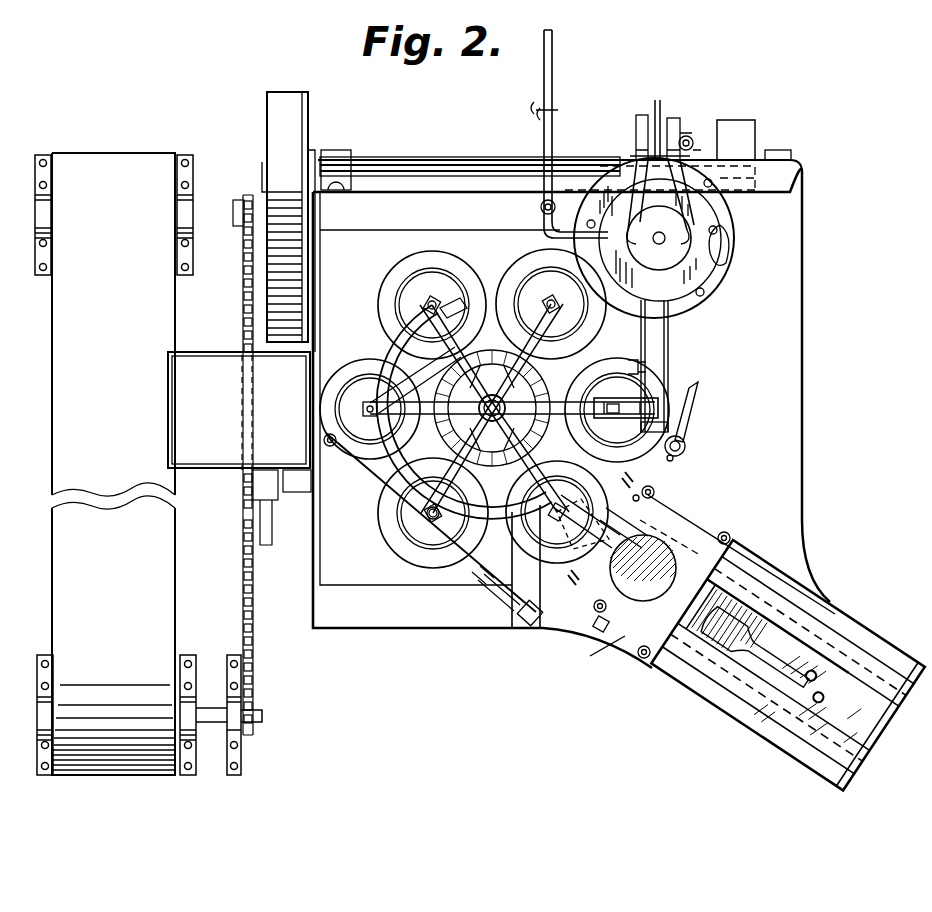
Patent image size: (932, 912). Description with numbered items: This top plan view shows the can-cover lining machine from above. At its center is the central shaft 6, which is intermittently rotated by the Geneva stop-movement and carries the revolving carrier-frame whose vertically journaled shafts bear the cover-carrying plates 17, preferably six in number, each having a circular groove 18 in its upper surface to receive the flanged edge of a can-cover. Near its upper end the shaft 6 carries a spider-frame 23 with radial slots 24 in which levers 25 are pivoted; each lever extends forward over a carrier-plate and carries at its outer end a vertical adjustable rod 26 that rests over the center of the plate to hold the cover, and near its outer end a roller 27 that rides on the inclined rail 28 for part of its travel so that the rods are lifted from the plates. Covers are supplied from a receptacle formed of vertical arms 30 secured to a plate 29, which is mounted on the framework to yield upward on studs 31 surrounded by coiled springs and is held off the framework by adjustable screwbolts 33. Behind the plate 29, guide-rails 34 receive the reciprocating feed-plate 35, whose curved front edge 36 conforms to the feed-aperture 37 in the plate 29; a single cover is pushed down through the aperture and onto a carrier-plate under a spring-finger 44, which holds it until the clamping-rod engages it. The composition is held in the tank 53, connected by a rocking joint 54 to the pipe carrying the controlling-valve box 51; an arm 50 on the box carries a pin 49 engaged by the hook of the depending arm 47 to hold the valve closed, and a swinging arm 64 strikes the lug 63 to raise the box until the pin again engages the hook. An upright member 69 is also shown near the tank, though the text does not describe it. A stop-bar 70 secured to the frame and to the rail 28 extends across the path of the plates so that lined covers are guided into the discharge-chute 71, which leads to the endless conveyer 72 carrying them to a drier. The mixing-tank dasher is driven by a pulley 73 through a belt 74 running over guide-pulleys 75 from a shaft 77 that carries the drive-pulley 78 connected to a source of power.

The central shaft 6 is at (510, 395).
The cover-carrying plates 17 is at (385, 324).
The circular grooves 18 is at (535, 278).
The spider-frame 23 is at (492, 440).
The radial slots 24 is at (515, 408).
The levers 25 is at (469, 323).
The vertical adjustable rod 26 is at (372, 413).
The roller 27 is at (380, 400).
The rail 28 is at (494, 459).
The plate 29 is at (618, 640).
The vertical arms 30 is at (680, 520).
The studs 31 is at (655, 490).
The adjustable screwbolts 33 is at (606, 527).
The guide-rails 34 is at (860, 640).
The feed-plate 35 is at (766, 656).
The curved front edge 36 is at (603, 527).
The feed-aperture 37 is at (595, 612).
The spring-finger 44 is at (566, 504).
The depending arm 47 is at (630, 370).
The pin 49 is at (592, 395).
The arm 50 is at (614, 393).
The controlling-valve box 51 is at (648, 398).
The composition-holding tank 53 is at (720, 246).
The rocking joint 54 is at (658, 220).
The projection or lug 63 is at (670, 412).
The swinging arm 64 is at (700, 393).
The rod 69 is at (545, 86).
The stop-bar 70 is at (428, 372).
The discharge-chute 71 is at (239, 410).
The endless conveyer 72 is at (113, 464).
The pulley 73 is at (659, 238).
The belt 74 is at (737, 208).
The guide-pulleys 75 is at (641, 135).
The shaft 77 is at (482, 165).
The drive-pulley 78 is at (755, 126).